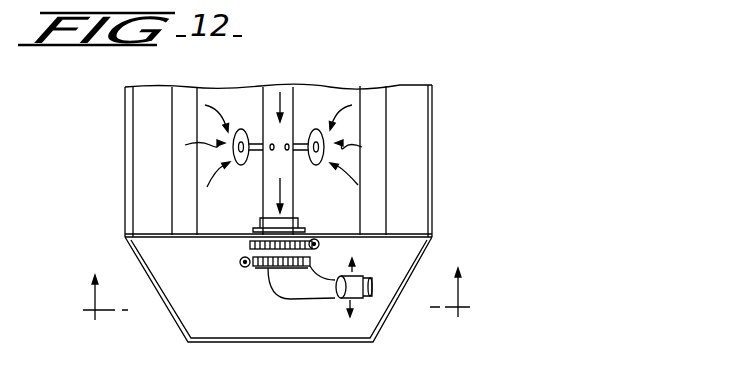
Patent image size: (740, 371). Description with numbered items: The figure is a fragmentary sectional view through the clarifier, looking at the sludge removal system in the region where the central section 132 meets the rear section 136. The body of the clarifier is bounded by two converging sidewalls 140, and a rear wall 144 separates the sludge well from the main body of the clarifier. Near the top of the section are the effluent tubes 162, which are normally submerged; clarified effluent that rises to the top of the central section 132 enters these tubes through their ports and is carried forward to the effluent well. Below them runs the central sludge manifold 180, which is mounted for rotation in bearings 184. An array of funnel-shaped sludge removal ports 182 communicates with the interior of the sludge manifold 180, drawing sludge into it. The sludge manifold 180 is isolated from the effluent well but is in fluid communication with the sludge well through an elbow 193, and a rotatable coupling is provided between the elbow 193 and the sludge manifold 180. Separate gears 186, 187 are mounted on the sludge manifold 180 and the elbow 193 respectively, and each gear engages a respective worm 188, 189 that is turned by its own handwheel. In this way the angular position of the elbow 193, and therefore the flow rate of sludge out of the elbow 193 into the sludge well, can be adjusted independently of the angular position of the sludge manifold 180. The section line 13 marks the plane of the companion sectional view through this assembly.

The section line 13- 13 is at (278, 302).
The central section 132 is at (446, 93).
The rear section 136 is at (214, 351).
The converging sidewalls 140 is at (126, 130).
The rear wall 144 is at (134, 241).
The effluent tubes 162 is at (170, 118).
The sludge manifold 180 is at (288, 112).
The sludge removal ports 182 is at (320, 150).
The bearings 184 is at (306, 230).
The gear 186 is at (250, 244).
The gear 187 is at (291, 298).
The worm 188 is at (321, 244).
The worm 189 is at (243, 266).
The elbow 193 is at (318, 299).